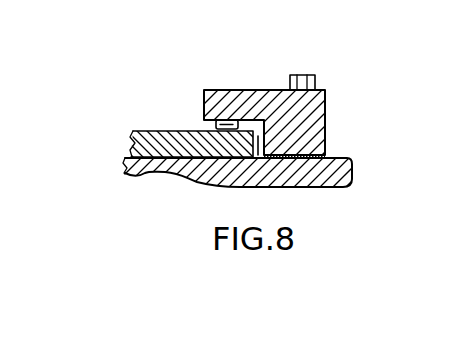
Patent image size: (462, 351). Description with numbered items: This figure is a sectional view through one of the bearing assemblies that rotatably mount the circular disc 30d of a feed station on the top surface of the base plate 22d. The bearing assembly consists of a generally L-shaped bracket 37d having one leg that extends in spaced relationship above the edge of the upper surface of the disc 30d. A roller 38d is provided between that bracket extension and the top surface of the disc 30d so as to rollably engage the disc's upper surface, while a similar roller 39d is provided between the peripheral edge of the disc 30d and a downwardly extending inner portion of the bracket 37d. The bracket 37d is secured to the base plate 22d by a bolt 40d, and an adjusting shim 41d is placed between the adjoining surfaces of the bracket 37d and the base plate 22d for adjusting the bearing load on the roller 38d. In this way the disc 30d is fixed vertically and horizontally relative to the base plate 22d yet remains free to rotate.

The base plate 22d is at (321, 168).
The circular disc 30d is at (128, 145).
The L-shaped bracket 37d is at (307, 113).
The roller 38d is at (213, 122).
The roller 39d is at (257, 158).
The bolt 40d is at (305, 77).
The adjusting shim 41d is at (326, 157).